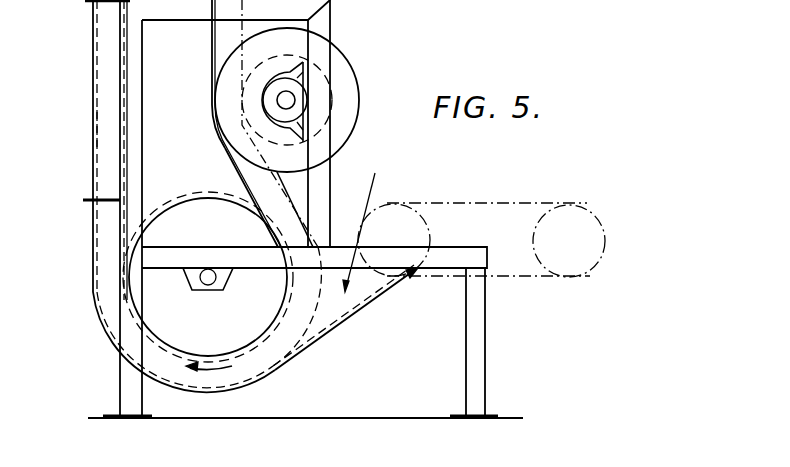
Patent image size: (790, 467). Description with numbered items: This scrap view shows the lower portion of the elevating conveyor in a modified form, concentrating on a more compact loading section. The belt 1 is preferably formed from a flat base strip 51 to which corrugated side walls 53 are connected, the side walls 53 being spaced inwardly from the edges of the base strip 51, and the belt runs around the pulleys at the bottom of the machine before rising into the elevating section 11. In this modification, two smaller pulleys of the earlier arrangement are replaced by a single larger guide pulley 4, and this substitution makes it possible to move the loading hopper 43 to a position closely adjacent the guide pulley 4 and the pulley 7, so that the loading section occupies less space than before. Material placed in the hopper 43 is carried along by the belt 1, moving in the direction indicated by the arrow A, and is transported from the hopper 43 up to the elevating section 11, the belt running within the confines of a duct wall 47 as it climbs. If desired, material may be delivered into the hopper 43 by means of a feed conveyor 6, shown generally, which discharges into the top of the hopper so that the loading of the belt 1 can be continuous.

The belt 1 is at (219, 48).
The guide pulley 4 is at (236, 334).
The feed conveyor 6 is at (467, 203).
The pulley 7 is at (353, 102).
The elevating section 11 is at (100, 88).
The loading hopper 43 is at (343, 318).
The duct wall 47 is at (94, 137).
The flat base strip 51 is at (243, 173).
The corrugated side walls 53 is at (285, 203).
The arrow A is at (213, 368).